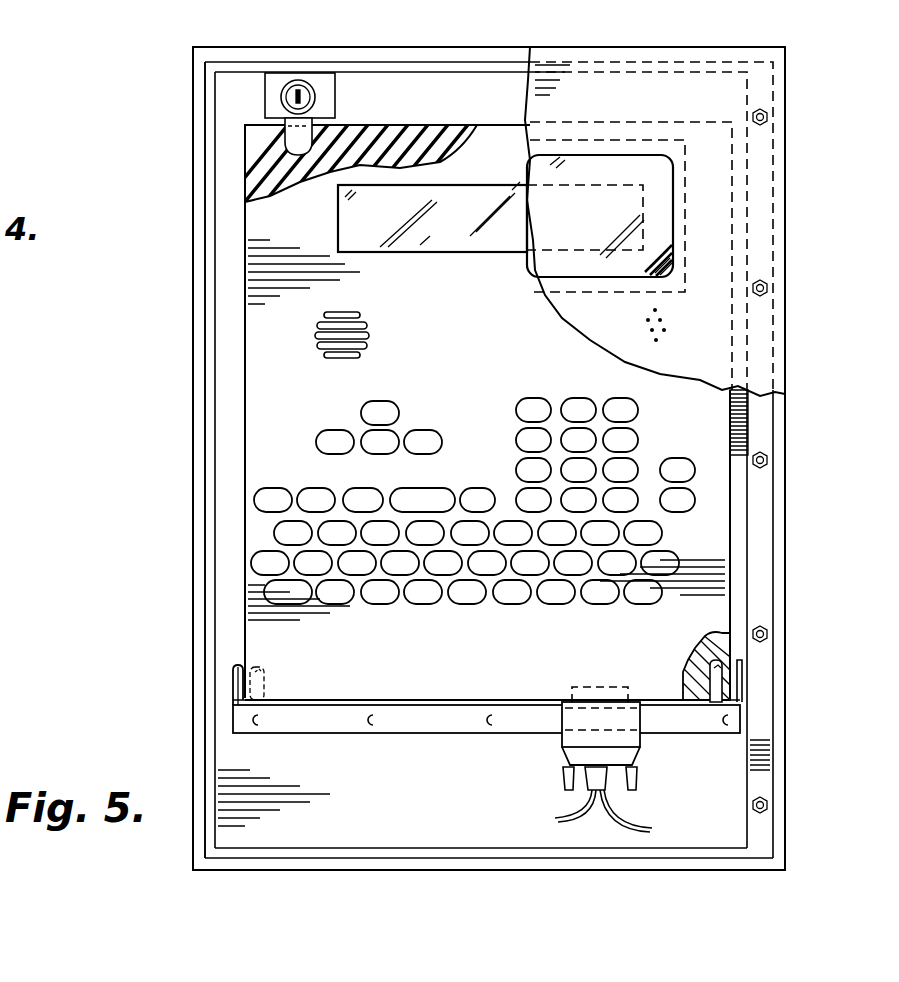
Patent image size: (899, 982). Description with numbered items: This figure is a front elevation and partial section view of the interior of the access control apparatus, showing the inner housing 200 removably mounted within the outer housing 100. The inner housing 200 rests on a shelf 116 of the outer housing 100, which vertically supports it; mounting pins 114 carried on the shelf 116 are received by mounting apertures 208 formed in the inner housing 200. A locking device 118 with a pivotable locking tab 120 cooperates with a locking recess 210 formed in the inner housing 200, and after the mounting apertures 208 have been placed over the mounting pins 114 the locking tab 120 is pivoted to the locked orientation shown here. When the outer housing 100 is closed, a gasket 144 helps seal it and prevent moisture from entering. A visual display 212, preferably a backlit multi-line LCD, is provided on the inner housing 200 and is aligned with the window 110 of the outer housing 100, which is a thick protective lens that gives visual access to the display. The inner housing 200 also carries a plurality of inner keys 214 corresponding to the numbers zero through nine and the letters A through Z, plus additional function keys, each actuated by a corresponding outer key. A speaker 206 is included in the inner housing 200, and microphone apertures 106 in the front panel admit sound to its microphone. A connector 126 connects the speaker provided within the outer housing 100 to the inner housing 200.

The outer housing 100 is at (806, 131).
The microphone apertures 106 is at (672, 332).
The window 110 is at (667, 232).
The mounting pins 114 is at (233, 708).
The shelf 116 is at (422, 725).
The locking device 118 is at (268, 88).
The locking tab 120 is at (297, 138).
The connector 126 is at (625, 742).
The gasket 144 is at (207, 302).
The inner housing 200 is at (242, 478).
The speaker 206 is at (302, 343).
The mounting apertures 208 is at (233, 675).
The locking recess 210 is at (337, 132).
The visual display 212 is at (455, 233).
The inner keys 214 is at (690, 527).